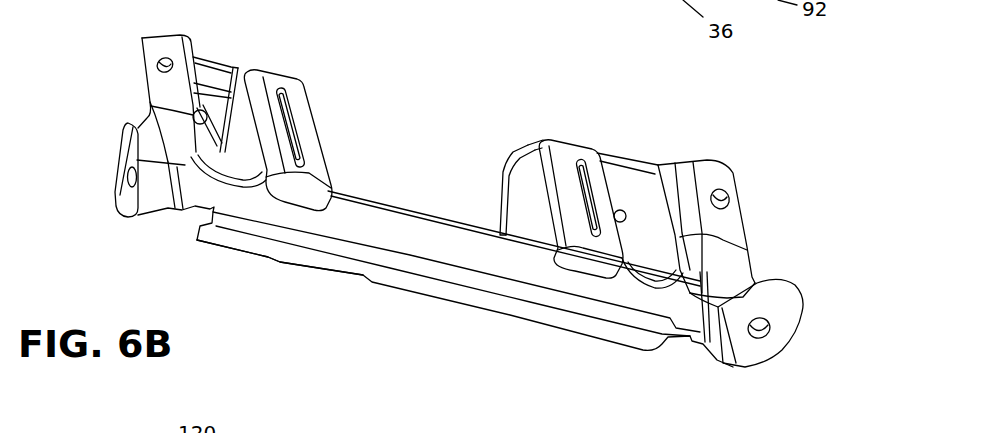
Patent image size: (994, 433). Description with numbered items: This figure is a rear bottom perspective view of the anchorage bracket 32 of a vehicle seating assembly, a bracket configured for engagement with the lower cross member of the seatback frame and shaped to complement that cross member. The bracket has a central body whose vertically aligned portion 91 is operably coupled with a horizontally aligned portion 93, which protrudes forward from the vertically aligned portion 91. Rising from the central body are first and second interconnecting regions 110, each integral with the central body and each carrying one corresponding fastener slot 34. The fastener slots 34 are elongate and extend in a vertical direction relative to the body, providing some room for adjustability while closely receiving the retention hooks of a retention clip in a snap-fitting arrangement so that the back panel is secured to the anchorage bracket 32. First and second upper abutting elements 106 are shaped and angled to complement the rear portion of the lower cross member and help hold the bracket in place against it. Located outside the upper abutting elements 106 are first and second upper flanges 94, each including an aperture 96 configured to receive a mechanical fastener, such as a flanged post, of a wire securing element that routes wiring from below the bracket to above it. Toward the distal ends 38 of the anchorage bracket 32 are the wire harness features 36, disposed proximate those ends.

The anchorage bracket 32 is at (420, 287).
The fastener slots 34 is at (298, 140).
The wire harness features 36 is at (113, 155).
The distal ends 38 is at (128, 185).
The vertically aligned portion 91 is at (380, 230).
The horizontally aligned portion 93 is at (269, 249).
The first and second upper flanges 94 is at (730, 190).
The apertures 96 is at (162, 60).
The first and second upper abutting elements 106 is at (210, 103).
The first and second interconnecting regions 110 is at (297, 92).